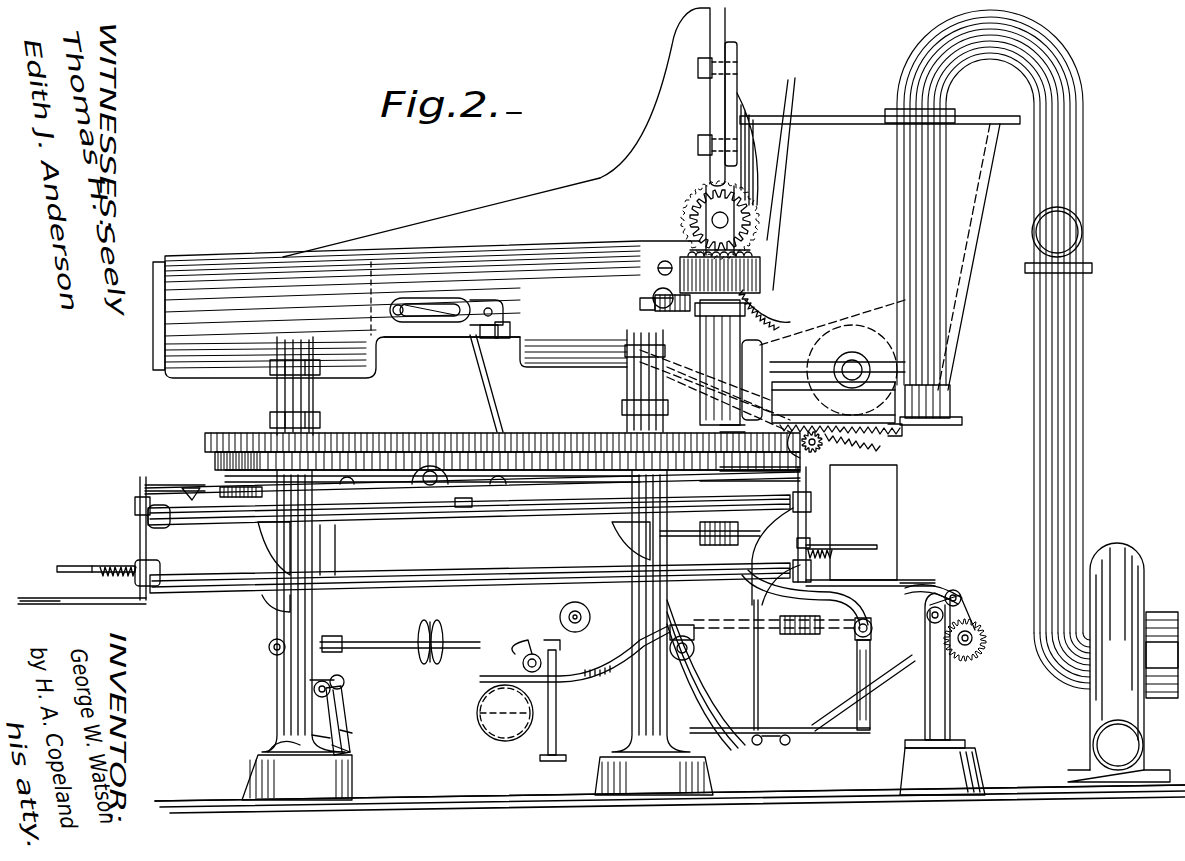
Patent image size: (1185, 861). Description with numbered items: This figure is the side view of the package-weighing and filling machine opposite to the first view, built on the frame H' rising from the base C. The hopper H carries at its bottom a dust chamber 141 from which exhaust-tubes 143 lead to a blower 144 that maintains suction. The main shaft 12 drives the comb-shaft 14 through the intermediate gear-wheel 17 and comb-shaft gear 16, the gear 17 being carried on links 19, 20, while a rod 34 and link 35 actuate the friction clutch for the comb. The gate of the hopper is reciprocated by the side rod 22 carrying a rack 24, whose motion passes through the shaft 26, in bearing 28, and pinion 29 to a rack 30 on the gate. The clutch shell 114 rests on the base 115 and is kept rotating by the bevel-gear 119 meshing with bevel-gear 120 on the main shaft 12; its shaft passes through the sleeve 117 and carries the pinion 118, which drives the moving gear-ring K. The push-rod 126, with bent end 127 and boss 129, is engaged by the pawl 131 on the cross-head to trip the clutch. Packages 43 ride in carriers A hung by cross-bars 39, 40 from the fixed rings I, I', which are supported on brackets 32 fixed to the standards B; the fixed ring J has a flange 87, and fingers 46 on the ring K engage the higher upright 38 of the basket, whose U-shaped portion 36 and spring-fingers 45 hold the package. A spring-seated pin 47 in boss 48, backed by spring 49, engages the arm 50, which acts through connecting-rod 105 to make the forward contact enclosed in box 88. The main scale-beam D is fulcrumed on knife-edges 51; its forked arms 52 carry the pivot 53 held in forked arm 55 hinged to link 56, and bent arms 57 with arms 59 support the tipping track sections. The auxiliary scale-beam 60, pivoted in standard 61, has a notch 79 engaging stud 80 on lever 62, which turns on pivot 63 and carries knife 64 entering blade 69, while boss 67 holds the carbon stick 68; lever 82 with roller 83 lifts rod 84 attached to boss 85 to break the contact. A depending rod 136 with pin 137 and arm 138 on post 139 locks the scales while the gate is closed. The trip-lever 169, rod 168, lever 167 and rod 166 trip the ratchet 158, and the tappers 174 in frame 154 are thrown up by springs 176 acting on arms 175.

The frame H' is at (441, 217).
The link 19 is at (782, 171).
The hopper H is at (880, 110).
The bevel-gear 120 is at (700, 199).
The main shaft 12 is at (712, 220).
The bevel-gear 119 is at (688, 250).
The clutch shell 114 is at (680, 276).
The clutch base 115 is at (653, 298).
The boss 129 is at (650, 306).
The bent end 127 is at (466, 303).
The pawl 131 is at (484, 300).
The link 35 is at (436, 340).
The rod 34 is at (478, 338).
The push-rod 126 is at (600, 340).
The depending rod 136 is at (493, 418).
The sleeve 117 is at (748, 318).
The intermediate gear-wheel 17 is at (781, 324).
The box 88 is at (752, 358).
The side rod 22 is at (765, 412).
The link 20 is at (900, 302).
The comb-shaft gear 16 is at (892, 340).
The comb-shaft 14 is at (902, 368).
The exhaust-tubes 143 is at (946, 222).
The chamber 141 is at (833, 387).
The pinion 118 is at (730, 436).
The bearing 28 is at (790, 442).
The pinion 29 is at (822, 447).
The rack 24 is at (876, 447).
The rack 30 is at (898, 432).
The shaft 26 is at (800, 469).
The trip-lever 169 is at (742, 481).
The cross-bar 39 is at (808, 500).
The spring-seated pin 47 is at (808, 538).
The package 43 is at (863, 522).
The arm 50 is at (772, 557).
The spring-fingers 45 is at (74, 566).
The cross-bar 40 is at (812, 572).
The horizontal U-shaped portion 36 is at (55, 604).
The carrier A is at (936, 570).
The pins 46 is at (163, 486).
The roller 83 is at (192, 490).
The upright end portion 38 is at (135, 506).
The lever 82 is at (204, 528).
The boss 48 is at (160, 568).
The spring 49 is at (118, 566).
The brackets 32 is at (270, 540).
The moving gear-ring K is at (423, 472).
The fixed supporting-ring J is at (398, 500).
The fixed ring I is at (469, 523).
The flange 87 is at (460, 508).
The rod 84 is at (336, 564).
The connecting-rod 105 is at (690, 525).
The bent arms 59 is at (754, 540).
The notch 79 is at (332, 643).
The fixed ring I' is at (470, 589).
The standards B is at (276, 628).
The standard 61 is at (268, 650).
The stud 80 is at (340, 658).
The auxiliary scale-beam 60 is at (386, 650).
The boss 85 is at (345, 685).
The pivot 63 is at (316, 692).
The lever 62 is at (332, 704).
The contact-blade 69 is at (318, 735).
The knife 64 is at (336, 735).
The carbon stick 68 is at (302, 748).
The boss 67 is at (340, 749).
The pin 137 is at (527, 655).
The arm 138 is at (558, 626).
The post 139 is at (557, 670).
The main scale-beam D is at (573, 683).
The knife-edges 51 is at (694, 655).
The forked arms 52 is at (784, 640).
The bent arms 57 is at (752, 600).
The link 56 is at (738, 730).
The rod 168 is at (760, 694).
The forked arm 55 is at (858, 672).
The knife-edged pivot 53 is at (872, 634).
The rod 166 is at (885, 684).
The lever 167 is at (790, 742).
The base C is at (670, 784).
The tappers 174 is at (930, 593).
The springs 176 is at (962, 602).
The arms 175 is at (972, 632).
The ratchet-wheel 158 is at (986, 652).
The frame 154 is at (951, 702).
The blower 144 is at (1110, 548).